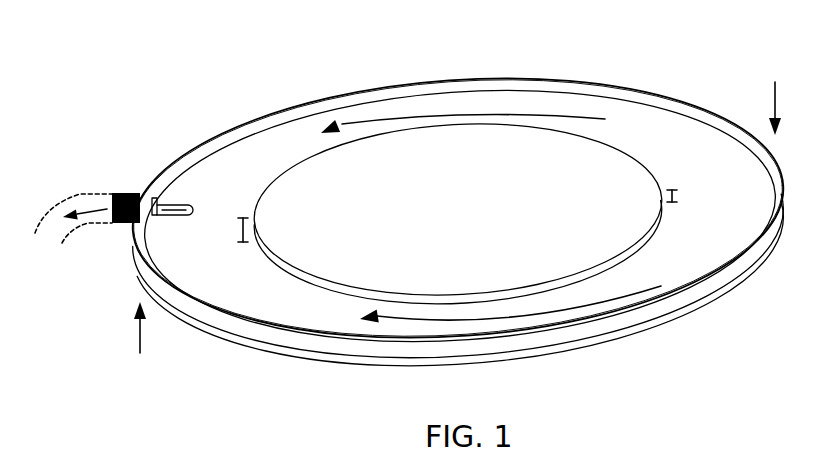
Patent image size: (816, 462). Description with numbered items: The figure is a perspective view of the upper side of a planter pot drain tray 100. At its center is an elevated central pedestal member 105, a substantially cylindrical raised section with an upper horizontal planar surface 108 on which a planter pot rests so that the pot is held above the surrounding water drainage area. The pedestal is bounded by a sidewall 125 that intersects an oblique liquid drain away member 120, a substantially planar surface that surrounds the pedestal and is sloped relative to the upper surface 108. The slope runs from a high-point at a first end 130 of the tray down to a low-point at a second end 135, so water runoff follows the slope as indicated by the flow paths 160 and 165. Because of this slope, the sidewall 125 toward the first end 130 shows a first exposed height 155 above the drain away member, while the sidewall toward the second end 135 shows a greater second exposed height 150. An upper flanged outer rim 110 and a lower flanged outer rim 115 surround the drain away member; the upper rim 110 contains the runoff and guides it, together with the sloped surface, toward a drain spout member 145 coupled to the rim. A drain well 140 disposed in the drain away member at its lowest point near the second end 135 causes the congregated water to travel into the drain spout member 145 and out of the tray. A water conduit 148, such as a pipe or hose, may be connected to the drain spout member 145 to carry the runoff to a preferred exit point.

The planter pot drain tray 100 is at (149, 80).
The elevated central pedestal member 105 is at (539, 183).
The upper horizontal planar surface 108 is at (469, 217).
The upper flanged outer rim 110 is at (697, 292).
The lower flanged outer rim 115 is at (652, 323).
The oblique liquid drain away member 120 is at (636, 133).
The sidewall 125 is at (304, 280).
The first end 130 is at (777, 98).
The second end 135 is at (138, 342).
The drain well 140 is at (173, 213).
The drain spout member 145 is at (125, 223).
The water conduit 148 is at (78, 193).
The second exposed height 150 is at (240, 220).
The first exposed height 155 is at (679, 196).
The water runoff slope path 160 is at (344, 122).
The water runoff slope path 165 is at (522, 312).